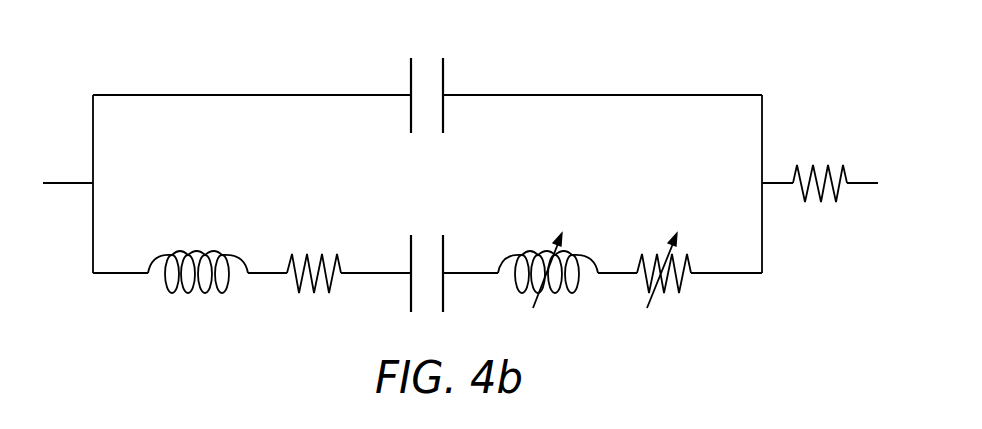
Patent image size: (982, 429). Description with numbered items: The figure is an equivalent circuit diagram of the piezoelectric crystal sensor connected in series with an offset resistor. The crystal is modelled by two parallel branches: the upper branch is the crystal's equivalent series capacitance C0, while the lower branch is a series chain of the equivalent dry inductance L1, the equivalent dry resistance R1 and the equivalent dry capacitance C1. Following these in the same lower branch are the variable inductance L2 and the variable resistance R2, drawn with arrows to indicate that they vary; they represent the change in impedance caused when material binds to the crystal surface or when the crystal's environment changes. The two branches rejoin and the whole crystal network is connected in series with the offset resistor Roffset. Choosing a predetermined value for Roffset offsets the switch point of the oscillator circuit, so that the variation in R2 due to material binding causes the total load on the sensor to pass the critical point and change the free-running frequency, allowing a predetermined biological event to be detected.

The equivalent series capacitance C0 is at (427, 114).
The equivalent dry inductance L1 is at (198, 293).
The equivalent dry resistance R1 is at (314, 295).
The equivalent dry capacitance C1 is at (427, 288).
The variable inductance L2 is at (548, 287).
The variable resistance R2 is at (664, 287).
The offset resistor Roffset is at (820, 200).